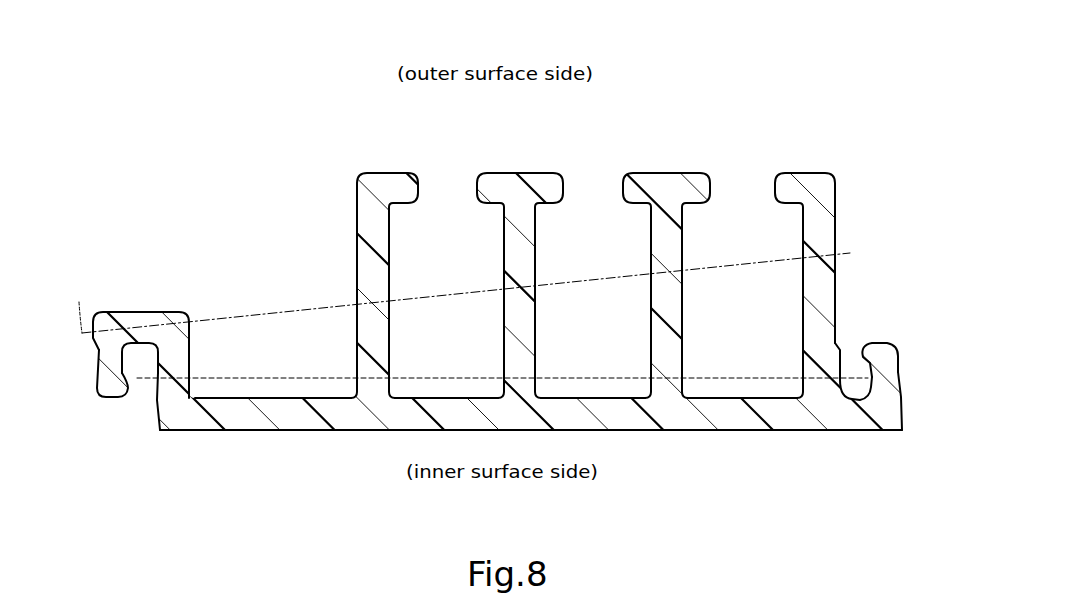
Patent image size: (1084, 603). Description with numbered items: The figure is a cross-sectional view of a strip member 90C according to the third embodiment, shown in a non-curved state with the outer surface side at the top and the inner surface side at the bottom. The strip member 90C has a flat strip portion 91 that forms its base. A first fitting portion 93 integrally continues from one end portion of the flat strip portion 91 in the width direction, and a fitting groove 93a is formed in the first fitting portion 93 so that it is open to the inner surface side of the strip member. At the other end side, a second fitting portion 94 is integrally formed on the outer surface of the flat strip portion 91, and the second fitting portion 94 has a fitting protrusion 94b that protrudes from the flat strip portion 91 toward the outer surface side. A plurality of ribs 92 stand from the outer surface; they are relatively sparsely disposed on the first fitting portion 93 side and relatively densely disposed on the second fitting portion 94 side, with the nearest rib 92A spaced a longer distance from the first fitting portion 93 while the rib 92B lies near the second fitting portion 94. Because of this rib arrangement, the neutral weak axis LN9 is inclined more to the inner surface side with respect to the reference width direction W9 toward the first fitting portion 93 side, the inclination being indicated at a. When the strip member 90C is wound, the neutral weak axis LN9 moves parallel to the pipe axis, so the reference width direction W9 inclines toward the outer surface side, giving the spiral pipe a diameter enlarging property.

The strip member 90C is at (172, 192).
The flat strip portion 91 is at (350, 430).
The ribs 92 is at (593, 285).
The nearest rib 92A is at (357, 225).
The rib 92B is at (837, 226).
The first fitting portion 93 is at (131, 311).
The fitting groove 93a is at (133, 386).
The second fitting portion 94 is at (901, 358).
The fitting protrusion 94b is at (883, 346).
The inclination angle a is at (79, 297).
The neutral weak axis LN9 is at (578, 279).
The reference width direction W9 is at (587, 377).